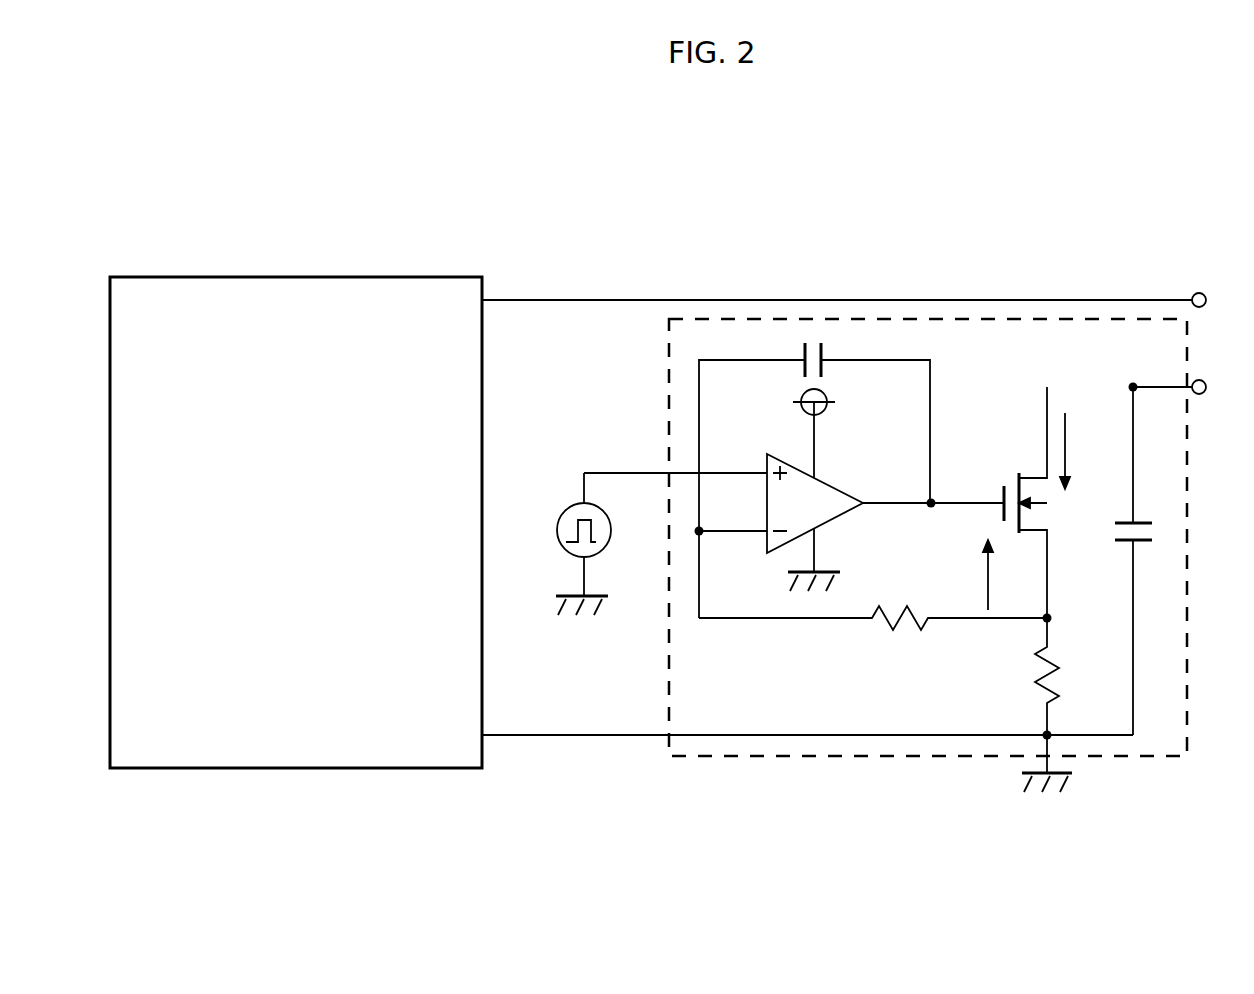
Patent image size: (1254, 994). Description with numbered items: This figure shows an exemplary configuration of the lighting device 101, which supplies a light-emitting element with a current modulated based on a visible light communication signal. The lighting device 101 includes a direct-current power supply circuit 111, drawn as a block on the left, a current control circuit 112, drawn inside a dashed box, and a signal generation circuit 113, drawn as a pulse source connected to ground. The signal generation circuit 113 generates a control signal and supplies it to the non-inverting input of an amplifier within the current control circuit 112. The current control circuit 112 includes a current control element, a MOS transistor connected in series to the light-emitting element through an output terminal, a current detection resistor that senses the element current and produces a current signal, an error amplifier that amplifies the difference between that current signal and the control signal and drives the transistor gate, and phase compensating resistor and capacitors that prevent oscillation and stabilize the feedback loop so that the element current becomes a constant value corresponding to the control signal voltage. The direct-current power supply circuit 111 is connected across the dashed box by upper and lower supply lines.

The lighting device 101 is at (1160, 193).
The direct-current (DC) power supply circuit 111 is at (348, 277).
The current control circuit 112 is at (823, 318).
The signal generation circuit 113 is at (572, 506).